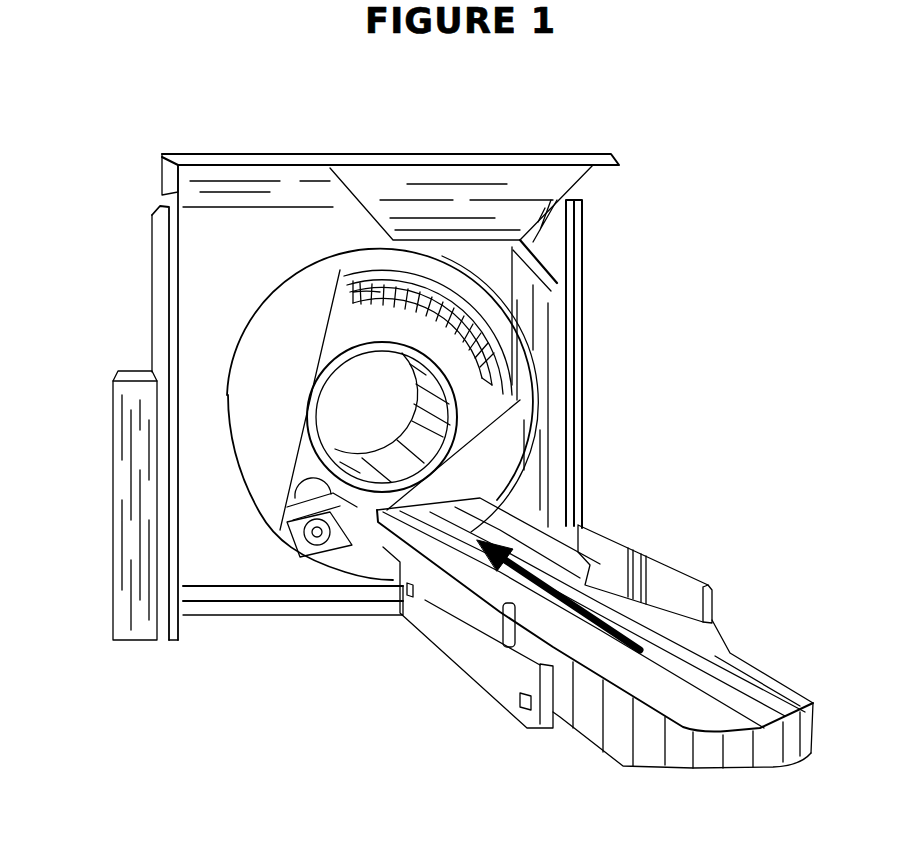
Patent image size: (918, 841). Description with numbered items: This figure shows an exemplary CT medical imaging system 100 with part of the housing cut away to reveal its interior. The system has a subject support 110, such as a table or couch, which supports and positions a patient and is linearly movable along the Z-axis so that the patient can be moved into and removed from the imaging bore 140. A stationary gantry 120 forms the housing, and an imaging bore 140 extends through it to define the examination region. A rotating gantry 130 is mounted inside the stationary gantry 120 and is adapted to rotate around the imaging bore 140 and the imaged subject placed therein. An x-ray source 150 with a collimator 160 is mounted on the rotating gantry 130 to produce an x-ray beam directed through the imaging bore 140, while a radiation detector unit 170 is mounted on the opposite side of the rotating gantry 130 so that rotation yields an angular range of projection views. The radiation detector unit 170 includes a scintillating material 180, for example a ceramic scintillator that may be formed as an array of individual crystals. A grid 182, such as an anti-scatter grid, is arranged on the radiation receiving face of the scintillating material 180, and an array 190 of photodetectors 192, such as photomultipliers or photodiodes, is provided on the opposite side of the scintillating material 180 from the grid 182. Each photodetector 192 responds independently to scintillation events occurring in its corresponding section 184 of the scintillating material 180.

The medical imaging system 100 is at (393, 93).
The subject support 110 is at (720, 688).
The stationary gantry 120 is at (253, 267).
The rotating gantry 130 is at (308, 408).
The imaging bore 140 is at (400, 443).
The x-ray source 150 is at (297, 551).
The collimator 160 is at (292, 487).
The radiation detector unit 170 is at (530, 332).
The scintillating material 180 is at (352, 293).
The grid 182 is at (397, 312).
The section of the scintillating material 184 is at (478, 356).
The array of photodetectors 190 is at (400, 277).
The photodetector 192 is at (410, 263).